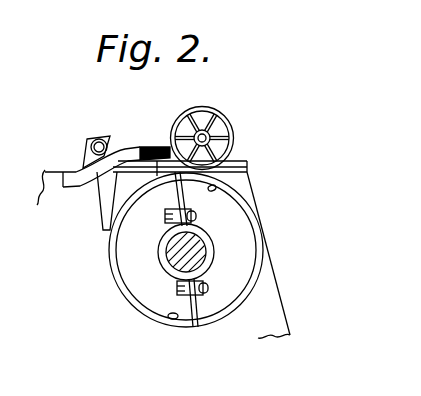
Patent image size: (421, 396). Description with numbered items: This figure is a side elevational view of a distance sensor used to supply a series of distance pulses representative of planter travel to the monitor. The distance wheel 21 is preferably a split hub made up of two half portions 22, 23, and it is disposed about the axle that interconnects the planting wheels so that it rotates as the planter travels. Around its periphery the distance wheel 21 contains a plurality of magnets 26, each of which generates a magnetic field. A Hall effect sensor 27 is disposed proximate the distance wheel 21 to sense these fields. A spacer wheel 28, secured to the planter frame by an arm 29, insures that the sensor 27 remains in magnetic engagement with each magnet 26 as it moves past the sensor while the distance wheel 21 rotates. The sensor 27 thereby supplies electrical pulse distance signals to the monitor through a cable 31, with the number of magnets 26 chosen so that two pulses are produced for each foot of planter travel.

The distance wheel 21 is at (232, 213).
The half portion 22 is at (147, 271).
The half portion 23 is at (247, 259).
The magnets 26 is at (216, 187).
The Hall effect sensor 27 is at (141, 145).
The spacer wheel 28 is at (229, 124).
The arm 29 is at (158, 146).
The cable 31 is at (76, 189).